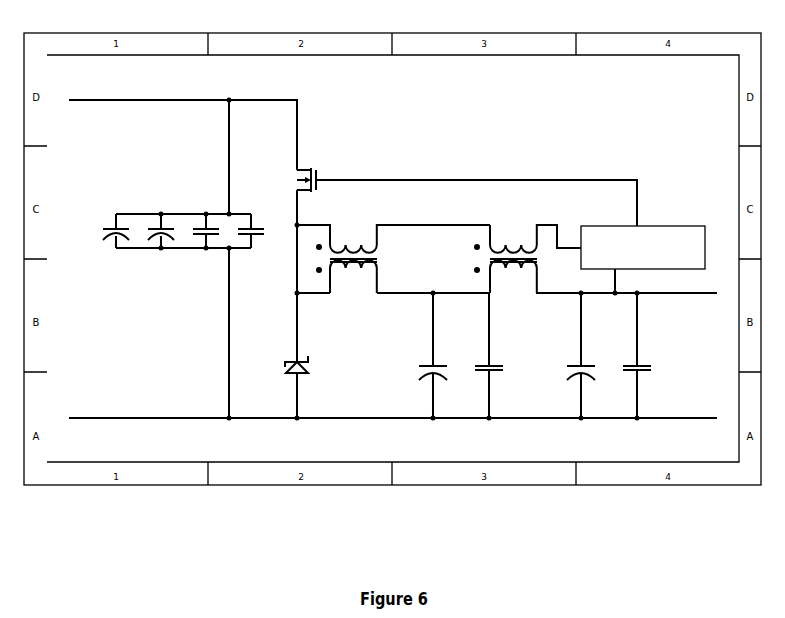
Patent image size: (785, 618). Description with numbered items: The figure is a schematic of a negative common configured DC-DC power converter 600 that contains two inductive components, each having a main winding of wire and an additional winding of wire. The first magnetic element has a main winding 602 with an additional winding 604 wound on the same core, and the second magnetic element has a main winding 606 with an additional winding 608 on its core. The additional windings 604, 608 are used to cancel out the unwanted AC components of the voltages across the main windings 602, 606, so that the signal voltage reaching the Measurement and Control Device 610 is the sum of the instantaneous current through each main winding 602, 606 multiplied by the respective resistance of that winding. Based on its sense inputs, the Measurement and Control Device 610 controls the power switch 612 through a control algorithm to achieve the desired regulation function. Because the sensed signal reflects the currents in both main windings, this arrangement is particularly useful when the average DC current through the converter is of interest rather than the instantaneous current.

The DC-DC power converter 600 is at (408, 526).
The main winding 602 is at (346, 268).
The additional winding 604 is at (340, 247).
The main winding 606 is at (519, 268).
The additional winding 608 is at (500, 248).
The Measurement and Control Device 610 is at (652, 226).
The power switch 612 is at (315, 167).